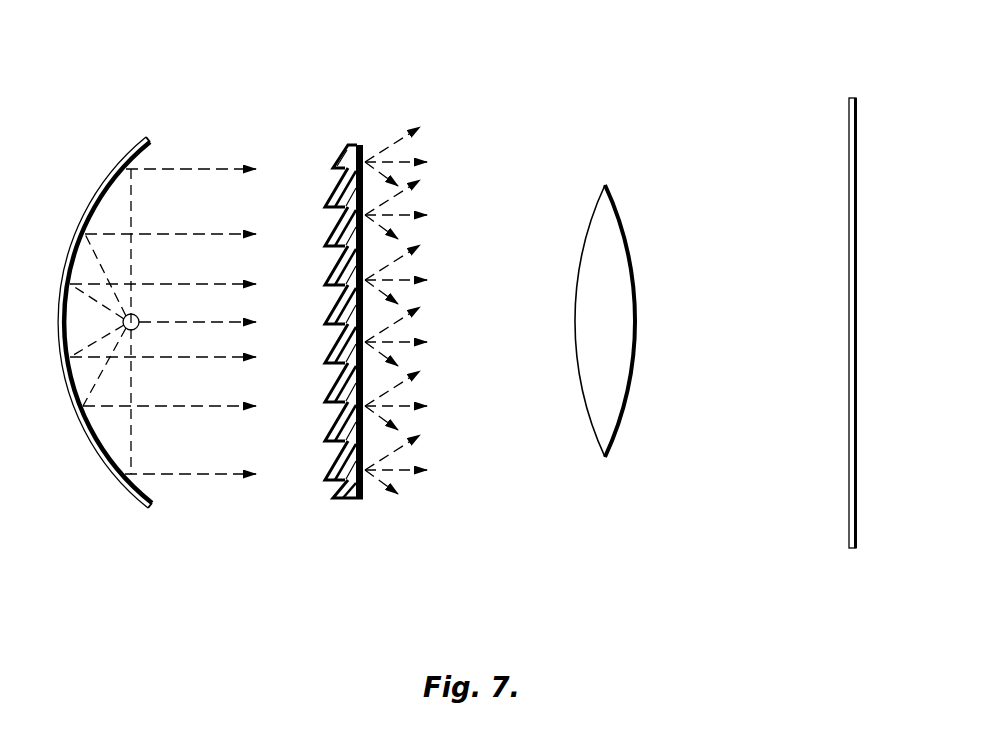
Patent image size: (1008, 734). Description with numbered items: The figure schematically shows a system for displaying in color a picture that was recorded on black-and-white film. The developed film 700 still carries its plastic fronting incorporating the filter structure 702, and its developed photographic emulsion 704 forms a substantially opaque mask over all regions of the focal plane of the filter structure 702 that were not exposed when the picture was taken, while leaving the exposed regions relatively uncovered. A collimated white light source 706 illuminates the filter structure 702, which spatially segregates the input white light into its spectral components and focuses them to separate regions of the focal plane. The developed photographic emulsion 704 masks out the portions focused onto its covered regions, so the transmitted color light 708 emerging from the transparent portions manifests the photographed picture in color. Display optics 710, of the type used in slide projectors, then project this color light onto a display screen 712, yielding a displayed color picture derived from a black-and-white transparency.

The developed film 700 is at (259, 377).
The filter structure 702 is at (378, 131).
The developed photographic emulsion 704 is at (360, 501).
The collimated white light source 706 is at (256, 218).
The transmitted color light 708 is at (422, 322).
The display optics 710 is at (604, 356).
The display screen 712 is at (851, 277).